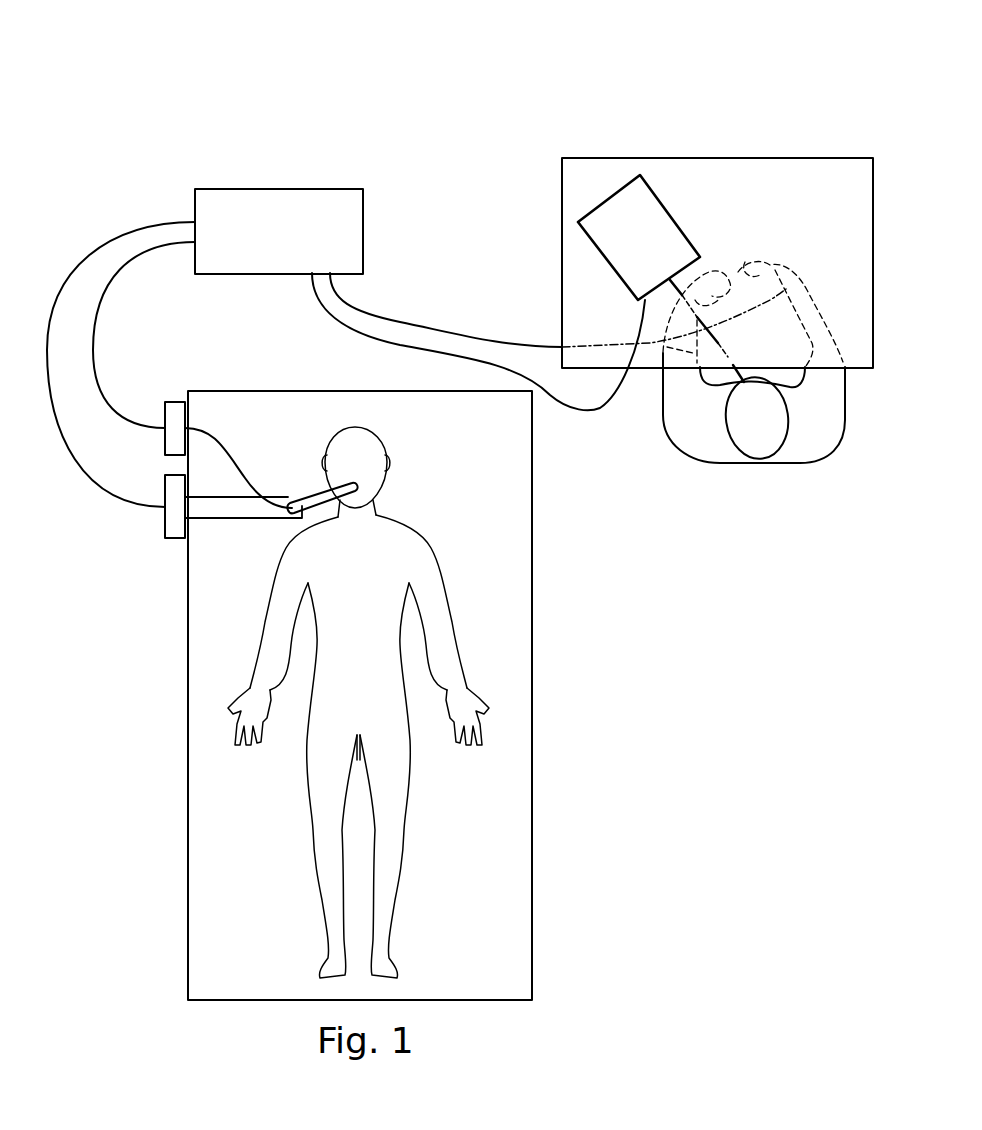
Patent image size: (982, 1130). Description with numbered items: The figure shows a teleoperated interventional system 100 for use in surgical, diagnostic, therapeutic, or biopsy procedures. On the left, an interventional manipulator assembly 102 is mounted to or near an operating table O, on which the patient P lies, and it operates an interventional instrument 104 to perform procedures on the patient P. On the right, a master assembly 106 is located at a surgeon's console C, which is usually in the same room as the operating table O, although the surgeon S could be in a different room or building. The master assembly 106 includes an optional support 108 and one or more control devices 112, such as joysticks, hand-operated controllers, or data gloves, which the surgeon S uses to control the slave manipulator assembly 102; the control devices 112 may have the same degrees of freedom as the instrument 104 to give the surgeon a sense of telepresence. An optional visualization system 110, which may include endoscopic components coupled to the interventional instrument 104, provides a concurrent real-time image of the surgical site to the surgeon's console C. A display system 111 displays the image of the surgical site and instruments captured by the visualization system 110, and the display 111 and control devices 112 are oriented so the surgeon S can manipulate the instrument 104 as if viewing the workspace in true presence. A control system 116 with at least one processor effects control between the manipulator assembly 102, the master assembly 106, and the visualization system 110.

The teleoperated interventional system 100 is at (362, 74).
The interventional manipulator assembly 102 is at (163, 522).
The interventional instrument 104 is at (315, 492).
The master assembly 106 is at (728, 138).
The support 108 is at (823, 158).
The visualization system 110 is at (173, 402).
The display system 111 is at (668, 212).
The control device 112 is at (745, 262).
The control system 116 is at (281, 189).
The surgeon's console C is at (655, 158).
The patient P is at (407, 520).
The surgeon S is at (795, 463).
The operating table O is at (535, 697).